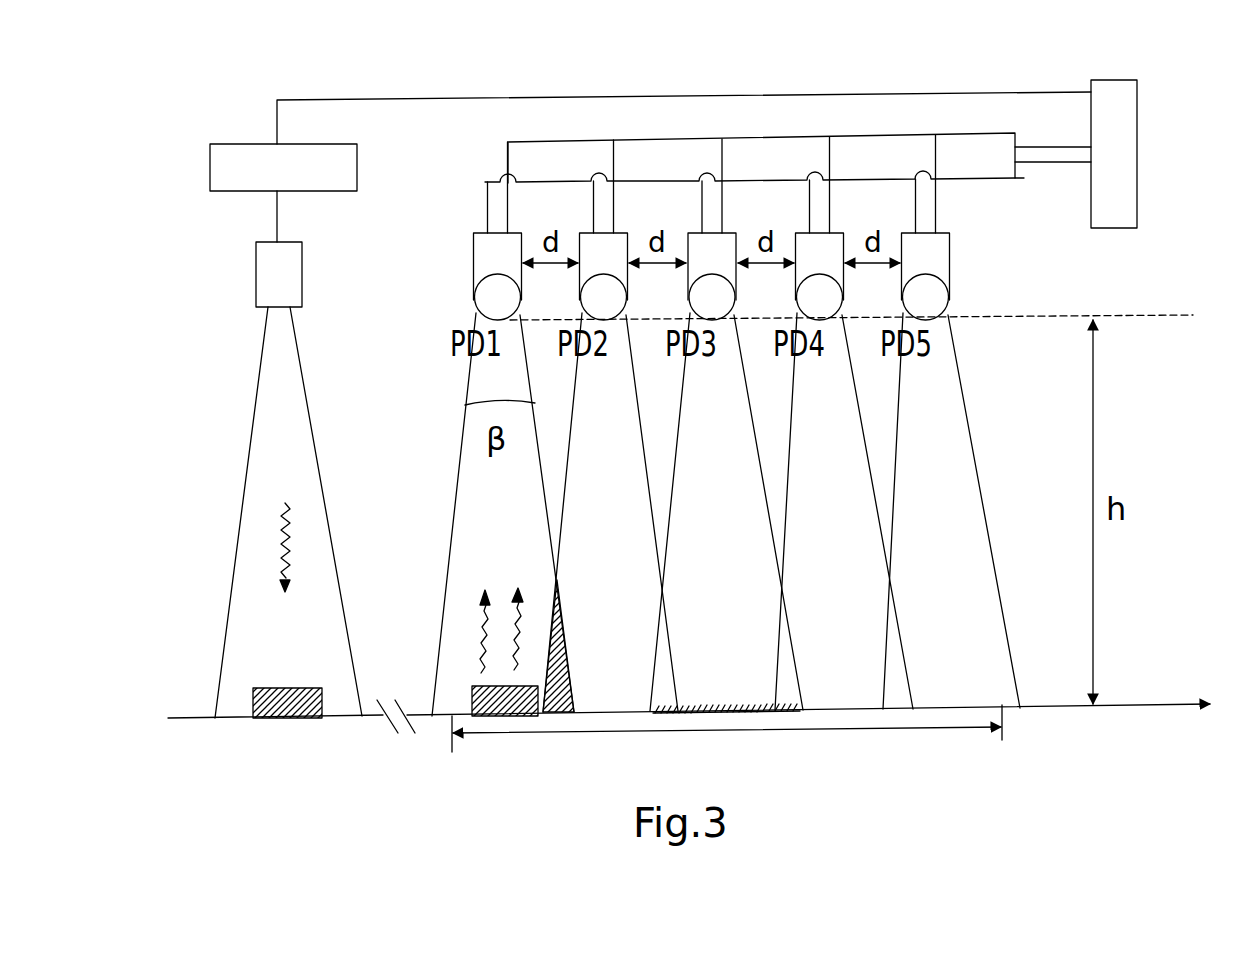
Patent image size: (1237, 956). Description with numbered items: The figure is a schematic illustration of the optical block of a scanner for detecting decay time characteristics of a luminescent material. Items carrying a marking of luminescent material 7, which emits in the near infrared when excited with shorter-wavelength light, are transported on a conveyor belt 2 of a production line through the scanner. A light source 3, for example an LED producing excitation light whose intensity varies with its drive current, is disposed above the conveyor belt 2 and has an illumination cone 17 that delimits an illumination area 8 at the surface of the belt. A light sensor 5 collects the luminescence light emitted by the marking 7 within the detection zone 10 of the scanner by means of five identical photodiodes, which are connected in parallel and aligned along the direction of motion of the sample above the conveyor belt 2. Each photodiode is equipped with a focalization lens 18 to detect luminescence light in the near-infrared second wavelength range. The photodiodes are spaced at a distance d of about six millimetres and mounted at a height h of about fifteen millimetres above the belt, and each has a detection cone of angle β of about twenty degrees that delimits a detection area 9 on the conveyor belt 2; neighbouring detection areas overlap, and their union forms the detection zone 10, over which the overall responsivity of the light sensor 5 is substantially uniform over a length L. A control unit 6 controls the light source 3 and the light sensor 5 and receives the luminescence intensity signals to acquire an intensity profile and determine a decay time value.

The conveyor belt 2 is at (1117, 705).
The light source 3 is at (279, 274).
The light sensor 5 is at (882, 148).
The control unit 6 is at (1108, 185).
The luminescent material 7 is at (277, 715).
The illumination area 8 is at (342, 718).
The detection area 9 is at (743, 715).
The detection zone 10 is at (863, 717).
The illumination cone 17 is at (297, 415).
The focalization lens 18 is at (947, 293).